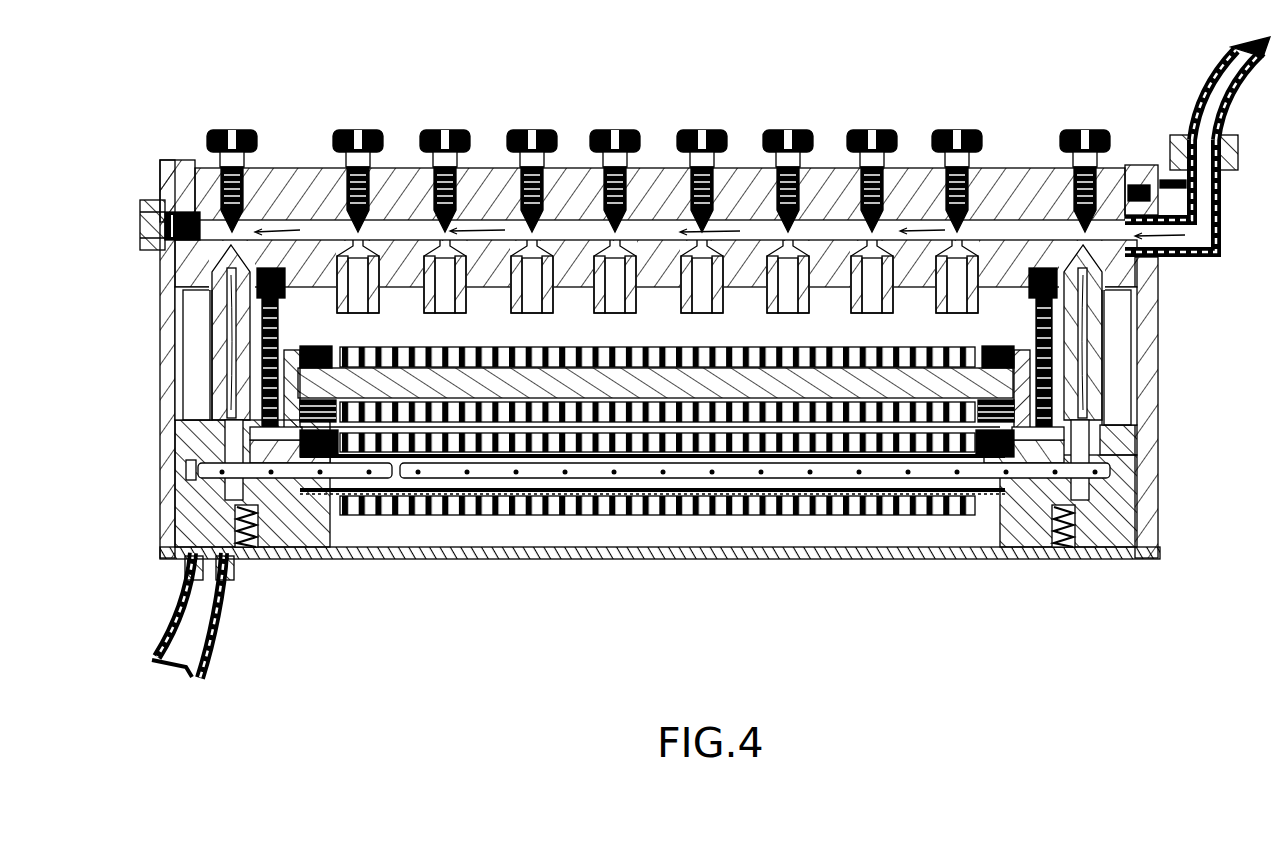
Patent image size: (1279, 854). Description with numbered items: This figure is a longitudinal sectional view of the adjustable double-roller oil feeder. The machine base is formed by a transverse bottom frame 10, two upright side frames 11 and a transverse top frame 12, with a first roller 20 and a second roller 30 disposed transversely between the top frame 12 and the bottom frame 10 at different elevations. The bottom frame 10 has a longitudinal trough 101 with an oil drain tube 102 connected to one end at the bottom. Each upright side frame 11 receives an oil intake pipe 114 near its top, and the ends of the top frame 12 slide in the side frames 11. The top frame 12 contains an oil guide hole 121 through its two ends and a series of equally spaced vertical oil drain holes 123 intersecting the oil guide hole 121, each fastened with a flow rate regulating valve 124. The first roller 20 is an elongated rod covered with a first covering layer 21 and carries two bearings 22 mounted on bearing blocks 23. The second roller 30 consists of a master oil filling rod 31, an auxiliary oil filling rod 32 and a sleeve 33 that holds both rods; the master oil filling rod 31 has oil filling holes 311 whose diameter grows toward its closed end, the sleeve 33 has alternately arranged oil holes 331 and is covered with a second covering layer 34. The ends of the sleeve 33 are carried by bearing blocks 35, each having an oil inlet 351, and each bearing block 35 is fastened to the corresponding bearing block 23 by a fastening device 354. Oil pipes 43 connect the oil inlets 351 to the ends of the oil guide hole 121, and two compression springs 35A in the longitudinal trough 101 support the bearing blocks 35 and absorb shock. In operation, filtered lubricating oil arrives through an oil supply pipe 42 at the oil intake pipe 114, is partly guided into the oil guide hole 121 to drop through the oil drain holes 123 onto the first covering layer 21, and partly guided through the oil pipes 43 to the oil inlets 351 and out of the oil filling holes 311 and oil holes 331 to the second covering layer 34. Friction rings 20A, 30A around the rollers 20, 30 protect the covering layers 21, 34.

The transverse bottom frame 10 is at (372, 556).
The upright side frame 11 is at (165, 350).
The transverse top frame 12 is at (1017, 168).
The first roller 20 is at (907, 366).
The friction ring 20A is at (462, 347).
The first covering layer 21 is at (572, 347).
The bearing 22 is at (328, 350).
The bearing block 23 is at (286, 342).
The second roller 30 is at (640, 516).
The friction ring 30A is at (455, 516).
The master oil filling rod 31 is at (1010, 479).
The auxiliary oil filling rod 32 is at (300, 480).
The sleeve 33 is at (415, 500).
The second covering layer 34 is at (720, 516).
The bearing block 35 is at (175, 510).
The compression spring 35A is at (250, 549).
The oil supply pipe 42 is at (1194, 100).
The oil pipe 43 is at (214, 326).
The longitudinal trough 101 is at (538, 548).
The oil drain tube 102 is at (226, 625).
The oil intake pipe 114 is at (1218, 258).
The oil guide hole 121 is at (1058, 227).
The oil drain hole 123 is at (905, 222).
The flow rate regulating valve 124 is at (440, 122).
The oil filling hole 311 is at (512, 472).
The oil hole 331 is at (560, 500).
The oil inlet 351 is at (180, 403).
The fastening device 354 is at (224, 370).